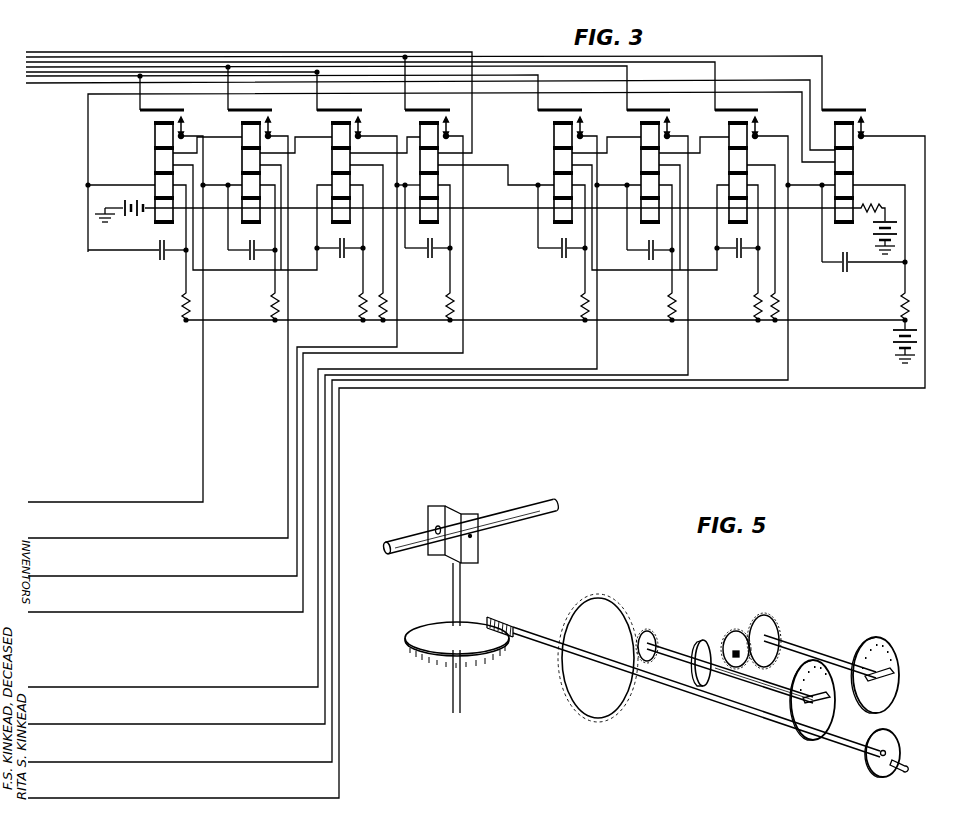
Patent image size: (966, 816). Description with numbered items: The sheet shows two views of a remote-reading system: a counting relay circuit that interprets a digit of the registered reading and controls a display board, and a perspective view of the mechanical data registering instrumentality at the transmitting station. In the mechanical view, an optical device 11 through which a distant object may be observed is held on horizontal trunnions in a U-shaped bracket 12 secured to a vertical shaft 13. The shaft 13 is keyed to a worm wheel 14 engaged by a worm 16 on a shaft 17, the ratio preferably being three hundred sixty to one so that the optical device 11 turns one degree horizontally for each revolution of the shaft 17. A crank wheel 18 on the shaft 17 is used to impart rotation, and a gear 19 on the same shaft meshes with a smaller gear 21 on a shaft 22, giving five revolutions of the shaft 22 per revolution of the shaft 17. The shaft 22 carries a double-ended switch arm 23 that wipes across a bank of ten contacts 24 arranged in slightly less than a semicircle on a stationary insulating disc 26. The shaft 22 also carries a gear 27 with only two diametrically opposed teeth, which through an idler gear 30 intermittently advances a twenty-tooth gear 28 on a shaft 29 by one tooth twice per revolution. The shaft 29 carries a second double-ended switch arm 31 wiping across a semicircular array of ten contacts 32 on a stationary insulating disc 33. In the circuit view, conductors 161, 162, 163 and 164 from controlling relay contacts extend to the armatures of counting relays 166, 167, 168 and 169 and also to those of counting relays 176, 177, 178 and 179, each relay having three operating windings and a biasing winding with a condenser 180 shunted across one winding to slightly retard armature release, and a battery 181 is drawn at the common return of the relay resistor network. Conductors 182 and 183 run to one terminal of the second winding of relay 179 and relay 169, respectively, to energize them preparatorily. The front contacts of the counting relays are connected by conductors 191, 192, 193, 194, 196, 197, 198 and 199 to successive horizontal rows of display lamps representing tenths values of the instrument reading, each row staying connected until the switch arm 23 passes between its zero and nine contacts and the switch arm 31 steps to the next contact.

In FIG. 5, the optical device 11 is at (533, 521).
In FIG. 5, the U-shaped bracket 12 is at (479, 549).
In FIG. 5, the shaft 13 is at (462, 589).
In FIG. 5, the worm wheel 14 is at (418, 660).
In FIG. 5, the worm 16 is at (505, 620).
In FIG. 5, the shaft 17 is at (540, 645).
In FIG. 5, the crank wheel 18 is at (868, 766).
In FIG. 5, the gear 19 is at (562, 700).
In FIG. 5, the gear 21 is at (655, 634).
In FIG. 5, the shaft 22 is at (676, 656).
In FIG. 5, the double-ended switch arm 23 is at (826, 708).
In FIG. 5, the bank of contacts 24 is at (804, 680).
In FIG. 5, the stationary insulating disc 26 is at (790, 698).
In FIG. 5, the gear 27 is at (699, 684).
In FIG. 5, the gear 28 is at (774, 620).
In FIG. 5, the shaft 29 is at (805, 652).
In FIG. 5, the idler gear 30 is at (733, 630).
In FIG. 5, the double-ended switch arm 31 is at (886, 692).
In FIG. 5, the contacts 32 is at (890, 657).
In FIG. 5, the stationary insulating disc 33 is at (900, 674).
In FIG. 3, the conductor 161 is at (48, 76).
In FIG. 3, the conductor 162 is at (114, 67).
In FIG. 3, the conductor 163 is at (178, 62).
In FIG. 3, the conductor 164 is at (246, 57).
In FIG. 3, the counting relay 166 is at (155, 138).
In FIG. 3, the counting relay 167 is at (244, 167).
In FIG. 3, the counting relay 168 is at (334, 172).
In FIG. 3, the counting relay 169 is at (440, 175).
In FIG. 3, the counting relay 176 is at (556, 129).
In FIG. 3, the counting relay 177 is at (643, 157).
In FIG. 3, the counting relay 178 is at (731, 159).
In FIG. 3, the counting relay 179 is at (855, 159).
In FIG. 3, the condenser 180 is at (166, 254).
In FIG. 3, the battery 181 is at (893, 341).
In FIG. 3, the conductor 182 is at (78, 85).
In FIG. 3, the conductor 183 is at (405, 53).
In FIG. 3, the conductor 191 is at (88, 502).
In FIG. 3, the conductor 192 is at (88, 538).
In FIG. 3, the conductor 193 is at (88, 576).
In FIG. 3, the conductor 194 is at (88, 612).
In FIG. 3, the conductor 196 is at (88, 687).
In FIG. 3, the conductor 197 is at (88, 724).
In FIG. 3, the conductor 198 is at (88, 762).
In FIG. 3, the conductor 199 is at (74, 793).